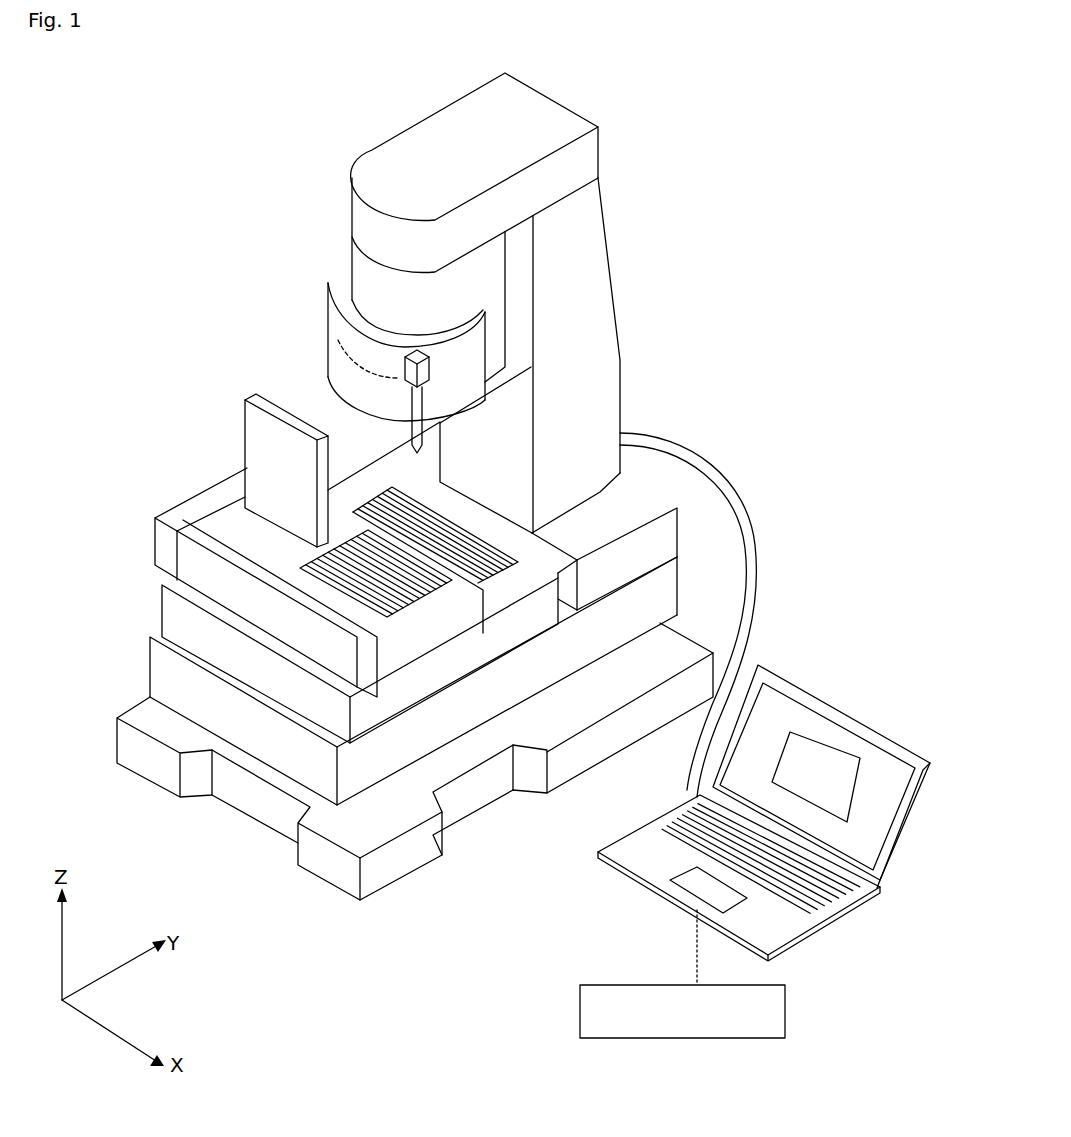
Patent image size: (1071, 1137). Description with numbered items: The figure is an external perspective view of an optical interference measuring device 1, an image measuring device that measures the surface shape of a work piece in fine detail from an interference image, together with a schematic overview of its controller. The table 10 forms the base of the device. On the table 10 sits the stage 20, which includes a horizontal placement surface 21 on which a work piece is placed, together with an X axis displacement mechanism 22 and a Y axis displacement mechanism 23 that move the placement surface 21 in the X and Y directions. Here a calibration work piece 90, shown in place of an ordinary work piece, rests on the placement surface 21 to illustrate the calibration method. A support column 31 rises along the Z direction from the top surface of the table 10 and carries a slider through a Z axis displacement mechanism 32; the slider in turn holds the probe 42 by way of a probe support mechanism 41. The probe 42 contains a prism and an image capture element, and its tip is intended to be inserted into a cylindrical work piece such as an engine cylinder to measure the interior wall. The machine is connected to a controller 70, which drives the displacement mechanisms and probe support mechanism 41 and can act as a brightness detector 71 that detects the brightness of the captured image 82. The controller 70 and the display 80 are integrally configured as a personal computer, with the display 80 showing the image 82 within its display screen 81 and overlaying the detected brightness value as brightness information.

The optical interference measuring device 1 is at (754, 72).
The table 10 is at (152, 680).
The stage 20 is at (101, 434).
The placement surface 21 is at (232, 505).
The X axis displacement mechanism 22 is at (155, 540).
The Y axis displacement mechanism 23 is at (162, 618).
The support column 31 is at (609, 268).
The Z axis displacement mechanism 32 is at (527, 262).
The probe support mechanism 41 is at (395, 375).
The probe 42 is at (400, 432).
The controller 70 is at (837, 923).
The brightness detector 71 is at (790, 1020).
The display 80 is at (892, 834).
The display screen 81 is at (852, 757).
The image 82 is at (803, 747).
The calibration work piece 90 is at (249, 398).